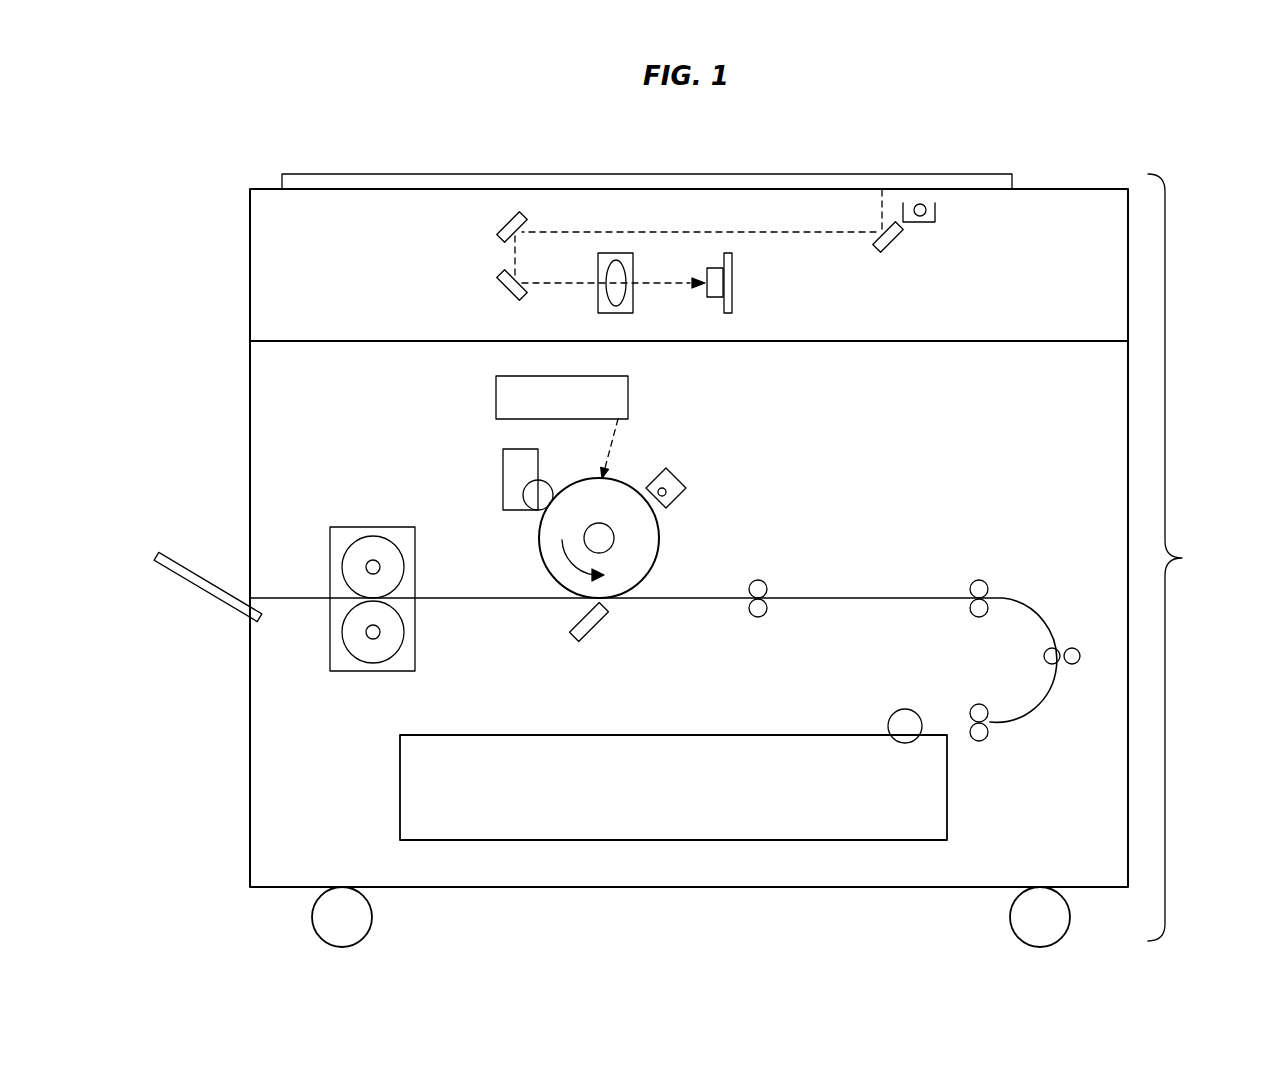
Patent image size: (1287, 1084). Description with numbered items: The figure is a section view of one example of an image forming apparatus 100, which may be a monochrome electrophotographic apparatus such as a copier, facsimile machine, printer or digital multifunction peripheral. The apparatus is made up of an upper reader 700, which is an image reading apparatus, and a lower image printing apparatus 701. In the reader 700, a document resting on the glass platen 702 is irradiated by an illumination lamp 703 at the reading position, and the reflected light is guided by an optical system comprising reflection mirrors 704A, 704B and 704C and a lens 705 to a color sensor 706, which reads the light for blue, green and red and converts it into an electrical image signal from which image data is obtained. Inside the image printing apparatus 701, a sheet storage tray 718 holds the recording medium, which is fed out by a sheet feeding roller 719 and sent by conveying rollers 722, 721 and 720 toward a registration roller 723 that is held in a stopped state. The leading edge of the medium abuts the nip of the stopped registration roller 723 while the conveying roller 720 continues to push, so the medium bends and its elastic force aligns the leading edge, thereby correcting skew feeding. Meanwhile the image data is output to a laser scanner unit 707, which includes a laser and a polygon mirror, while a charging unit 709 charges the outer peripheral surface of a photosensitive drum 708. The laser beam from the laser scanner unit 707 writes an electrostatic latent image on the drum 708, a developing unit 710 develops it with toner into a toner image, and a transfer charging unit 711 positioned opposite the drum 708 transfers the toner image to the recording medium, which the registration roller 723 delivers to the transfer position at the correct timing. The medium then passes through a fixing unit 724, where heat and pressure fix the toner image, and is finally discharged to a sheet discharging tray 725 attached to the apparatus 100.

The image forming apparatus 100 is at (1194, 557).
The reader 700 is at (250, 260).
The image printing apparatus 701 is at (250, 407).
The platen glass 702 is at (645, 174).
The illumination lamp 703 is at (935, 210).
The reflection mirror 704A is at (897, 246).
The reflection mirror 704B is at (501, 218).
The reflection mirror 704C is at (501, 294).
The lens 705 is at (633, 300).
The color sensor 706 is at (733, 283).
The laser scanner unit 707 is at (496, 395).
The photosensitive drum 708 is at (656, 566).
The charging unit 709 is at (693, 457).
The developing unit 710 is at (503, 478).
The transfer charging unit 711 is at (598, 628).
The sheet storage tray 718 is at (400, 788).
The sheet feeding roller 719 is at (903, 708).
The conveying roller 720 is at (979, 580).
The conveying roller 721 is at (1074, 648).
The conveying roller 722 is at (979, 743).
The registration roller 723 is at (758, 580).
The fixing unit 724 is at (373, 527).
The sheet discharging tray 725 is at (201, 541).